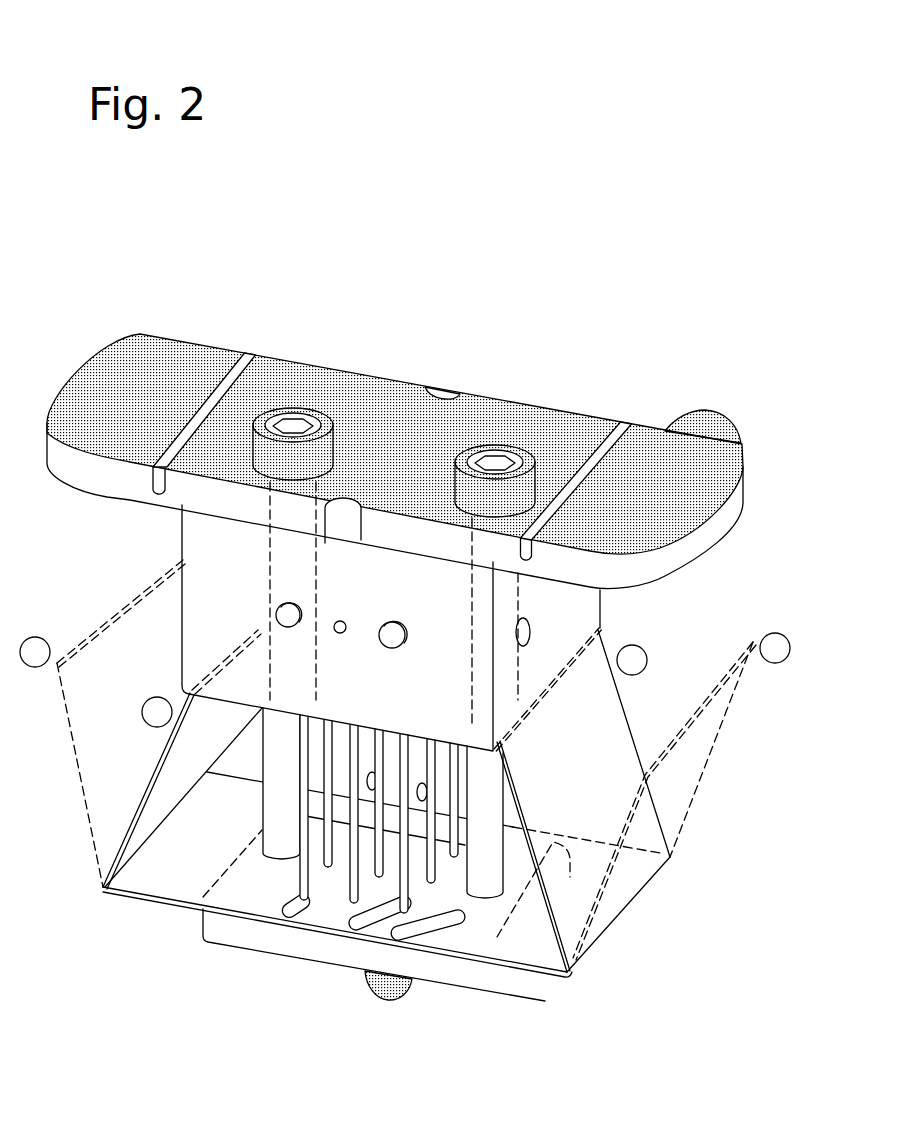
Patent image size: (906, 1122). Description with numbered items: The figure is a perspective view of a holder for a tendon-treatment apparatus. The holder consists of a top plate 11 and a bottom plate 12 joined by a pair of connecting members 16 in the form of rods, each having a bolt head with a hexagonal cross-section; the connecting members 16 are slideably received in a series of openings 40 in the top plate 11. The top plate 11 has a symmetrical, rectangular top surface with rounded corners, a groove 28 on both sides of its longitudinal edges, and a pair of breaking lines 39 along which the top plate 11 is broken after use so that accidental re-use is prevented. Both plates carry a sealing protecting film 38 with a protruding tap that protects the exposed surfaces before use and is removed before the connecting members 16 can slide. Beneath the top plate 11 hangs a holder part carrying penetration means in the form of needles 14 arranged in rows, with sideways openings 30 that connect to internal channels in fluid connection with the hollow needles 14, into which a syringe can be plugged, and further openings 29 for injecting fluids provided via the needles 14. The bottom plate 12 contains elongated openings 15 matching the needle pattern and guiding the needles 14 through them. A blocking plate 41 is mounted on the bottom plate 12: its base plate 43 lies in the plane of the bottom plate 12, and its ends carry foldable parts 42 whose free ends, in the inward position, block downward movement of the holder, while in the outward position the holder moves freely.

The top plate 11 is at (756, 485).
The bottom plate 12 is at (223, 933).
The needles 14 is at (300, 877).
The openings 15 is at (343, 907).
The connecting members 16 is at (485, 875).
The groove 28 is at (440, 390).
The openings 29 is at (277, 620).
The openings 30 is at (527, 634).
The sealing protecting film 38 is at (703, 422).
The breaking lines 39 is at (236, 377).
The openings 40 is at (291, 423).
The blocking plate 41 is at (100, 895).
The foldable parts 42 is at (585, 707).
The base plate 43 is at (217, 912).